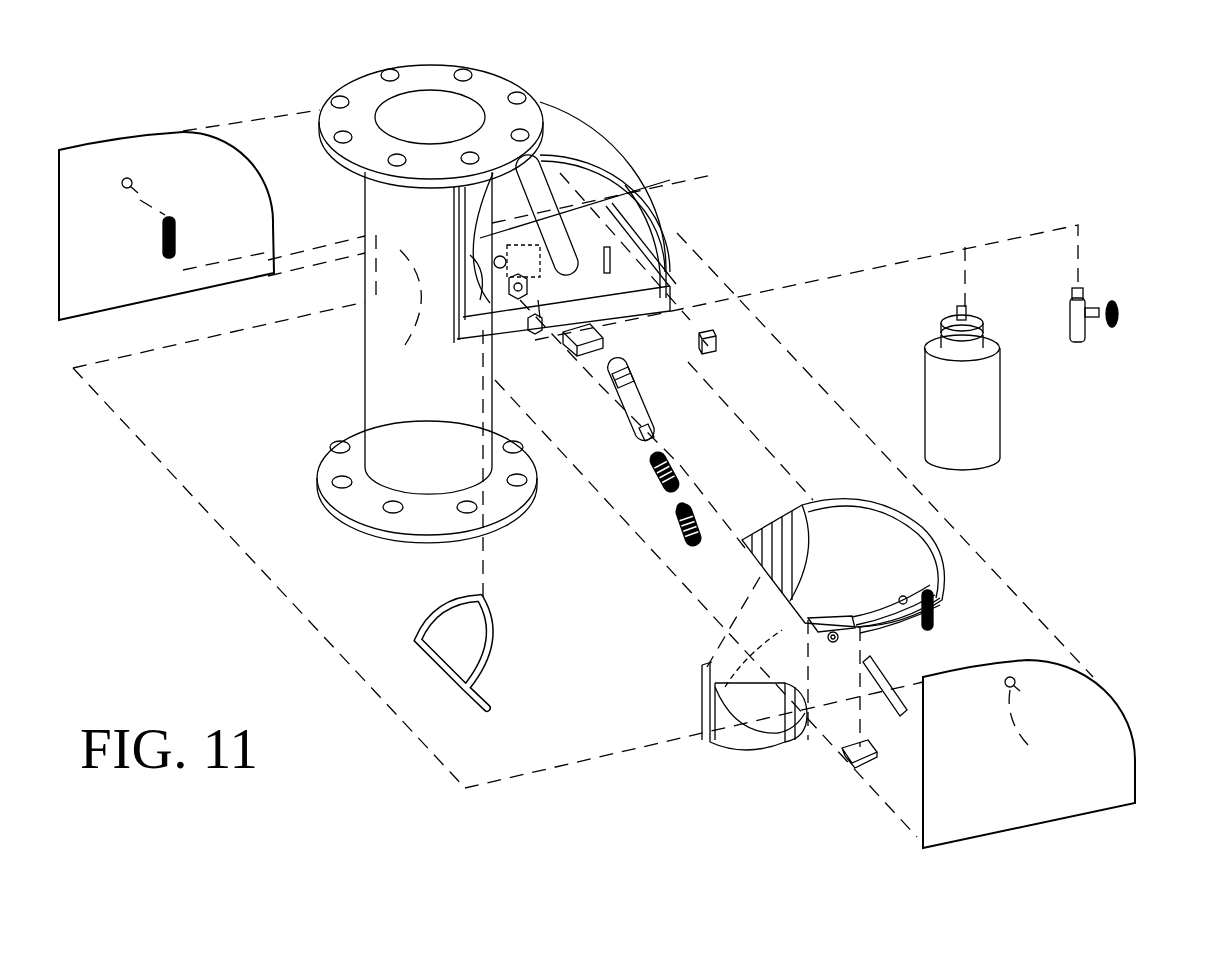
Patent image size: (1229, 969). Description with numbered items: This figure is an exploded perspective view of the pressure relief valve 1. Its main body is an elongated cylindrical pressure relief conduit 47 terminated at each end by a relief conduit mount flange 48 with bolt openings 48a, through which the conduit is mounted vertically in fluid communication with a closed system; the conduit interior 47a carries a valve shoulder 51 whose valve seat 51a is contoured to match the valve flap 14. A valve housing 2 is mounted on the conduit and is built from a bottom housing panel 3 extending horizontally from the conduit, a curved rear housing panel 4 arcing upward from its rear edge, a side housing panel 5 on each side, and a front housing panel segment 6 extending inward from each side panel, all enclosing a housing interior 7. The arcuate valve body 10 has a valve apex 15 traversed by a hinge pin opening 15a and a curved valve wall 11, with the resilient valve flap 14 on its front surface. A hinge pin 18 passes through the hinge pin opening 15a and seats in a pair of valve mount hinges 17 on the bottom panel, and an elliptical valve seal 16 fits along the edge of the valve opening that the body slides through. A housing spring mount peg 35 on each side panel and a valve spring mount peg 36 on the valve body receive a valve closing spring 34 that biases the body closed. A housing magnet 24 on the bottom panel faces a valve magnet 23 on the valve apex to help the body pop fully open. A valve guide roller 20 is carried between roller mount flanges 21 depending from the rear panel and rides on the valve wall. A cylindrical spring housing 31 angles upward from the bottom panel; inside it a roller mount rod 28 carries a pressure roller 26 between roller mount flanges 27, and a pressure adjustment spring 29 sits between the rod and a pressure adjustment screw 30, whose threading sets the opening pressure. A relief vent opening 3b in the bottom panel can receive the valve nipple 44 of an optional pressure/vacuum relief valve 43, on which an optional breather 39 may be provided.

The pressure relief valve 1 is at (622, 159).
The valve housing 2 is at (596, 120).
The bottom housing panel 3 is at (538, 318).
The relief vent opening 3b is at (614, 248).
The rear housing panel 4 is at (548, 112).
The side housing panel 5 is at (137, 145).
The front housing panel segment 6 is at (456, 240).
The housing interior 7 is at (626, 207).
The valve body 10 is at (871, 554).
The valve wall 11 is at (938, 555).
The valve flap 14 is at (772, 510).
The valve apex 15 is at (857, 618).
The hinge pin opening 15a is at (835, 645).
The valve seal 16 is at (485, 600).
The valve mount hinge 17 is at (490, 268).
The hinge pin 18 is at (882, 676).
The valve guide roller 20 is at (700, 346).
The roller mount flange 21 is at (716, 343).
The valve magnet 23 is at (855, 766).
The housing magnet 24 is at (524, 244).
The pressure roller 26 is at (622, 366).
The roller mount flange 27 is at (625, 410).
The roller mount rod 28 is at (640, 438).
The pressure adjustment spring 29 is at (655, 478).
The pressure adjustment screw 30 is at (678, 535).
The spring housing 31 is at (627, 163).
The valve closing spring 34 is at (176, 235).
The housing spring mount peg 35 is at (133, 182).
The valve spring mount peg 36 is at (925, 600).
The breather 39 is at (1022, 370).
The pressure/vacuum relief valve 43 is at (952, 316).
The valve nipple 44 is at (968, 310).
The pressure relief conduit 47 is at (360, 380).
The conduit interior 47a is at (419, 128).
The relief conduit mount flange 48 is at (357, 84).
The bolt openings 48a is at (388, 163).
The valve shoulder 51 is at (365, 348).
The valve seat 51a is at (768, 646).